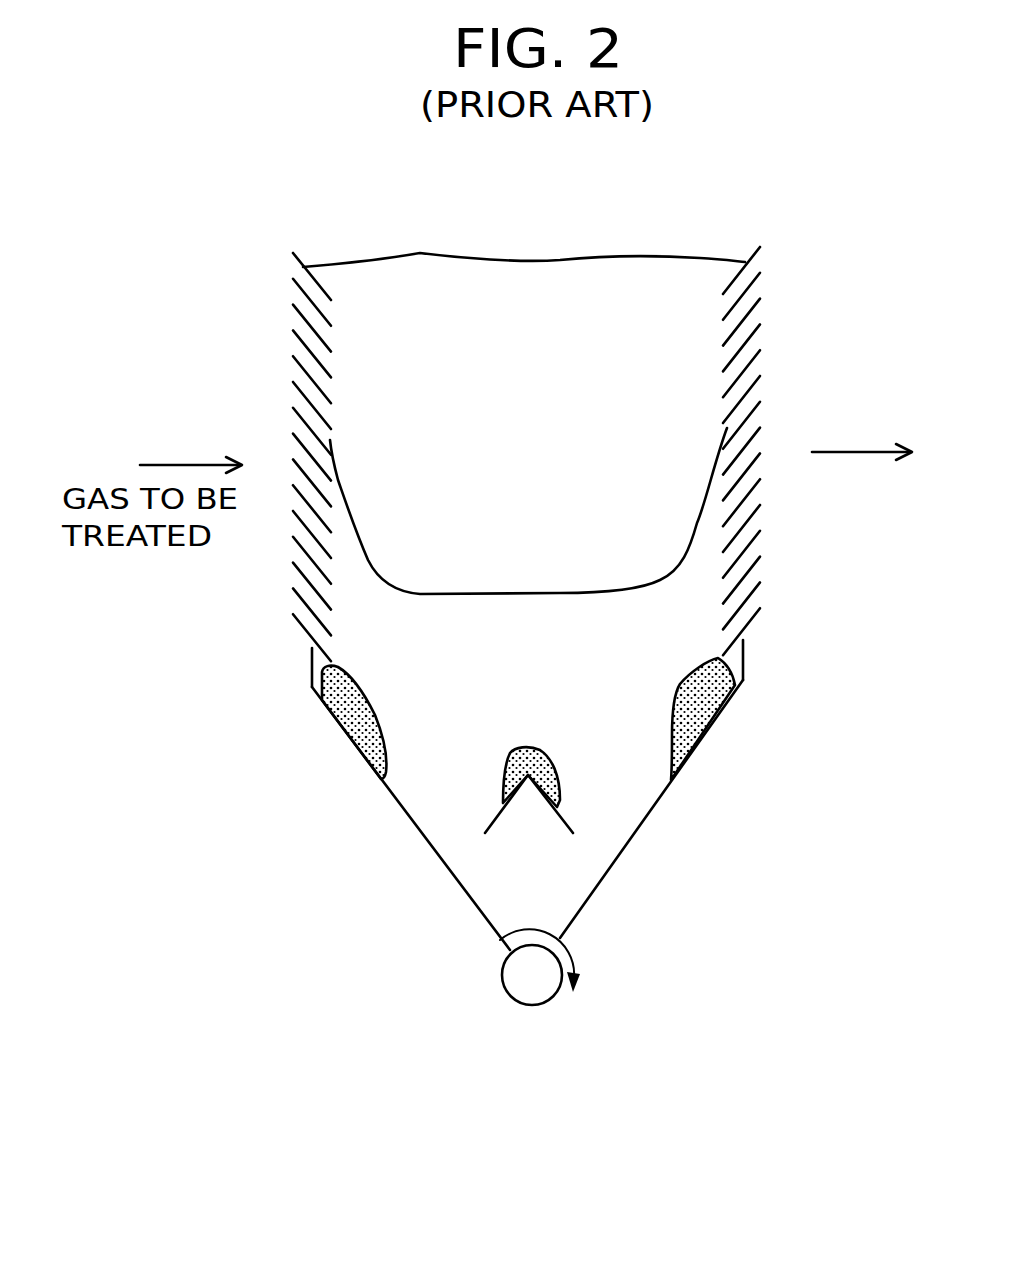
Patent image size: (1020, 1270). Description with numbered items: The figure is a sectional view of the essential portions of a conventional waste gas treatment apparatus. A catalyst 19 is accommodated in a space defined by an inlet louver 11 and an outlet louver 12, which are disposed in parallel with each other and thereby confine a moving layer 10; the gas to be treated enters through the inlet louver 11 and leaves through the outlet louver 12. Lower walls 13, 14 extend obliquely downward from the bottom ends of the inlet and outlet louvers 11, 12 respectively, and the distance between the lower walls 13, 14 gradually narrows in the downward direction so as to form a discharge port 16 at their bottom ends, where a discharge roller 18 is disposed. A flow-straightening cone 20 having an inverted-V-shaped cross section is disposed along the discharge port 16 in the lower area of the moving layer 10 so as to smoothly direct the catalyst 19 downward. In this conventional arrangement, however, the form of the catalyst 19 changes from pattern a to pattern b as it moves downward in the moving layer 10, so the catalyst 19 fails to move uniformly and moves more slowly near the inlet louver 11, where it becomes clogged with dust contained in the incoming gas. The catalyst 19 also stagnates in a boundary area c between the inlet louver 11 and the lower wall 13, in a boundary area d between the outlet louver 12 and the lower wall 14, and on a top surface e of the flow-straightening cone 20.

The moving layer 10 is at (622, 524).
The inlet louver 11 is at (302, 425).
The outlet louver 12 is at (752, 420).
The lower wall 13 is at (412, 822).
The lower wall 14 is at (650, 818).
The discharge port 16 is at (505, 934).
The discharge roller 18 is at (545, 1000).
The catalyst 19 is at (557, 444).
The flow-straightening cone 20 is at (488, 835).
The pattern a is at (568, 262).
The pattern b is at (537, 596).
The boundary area c is at (372, 706).
The boundary area d is at (676, 690).
The top surface e is at (548, 760).